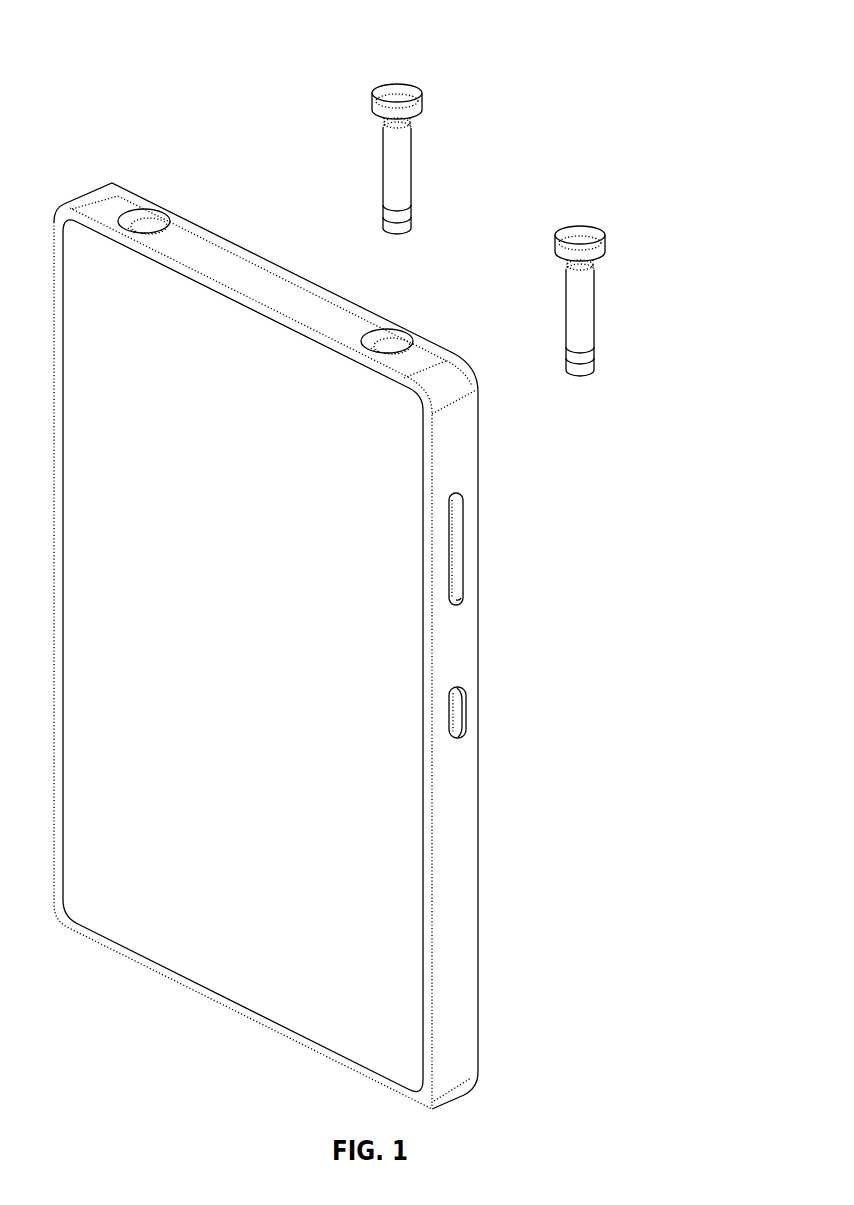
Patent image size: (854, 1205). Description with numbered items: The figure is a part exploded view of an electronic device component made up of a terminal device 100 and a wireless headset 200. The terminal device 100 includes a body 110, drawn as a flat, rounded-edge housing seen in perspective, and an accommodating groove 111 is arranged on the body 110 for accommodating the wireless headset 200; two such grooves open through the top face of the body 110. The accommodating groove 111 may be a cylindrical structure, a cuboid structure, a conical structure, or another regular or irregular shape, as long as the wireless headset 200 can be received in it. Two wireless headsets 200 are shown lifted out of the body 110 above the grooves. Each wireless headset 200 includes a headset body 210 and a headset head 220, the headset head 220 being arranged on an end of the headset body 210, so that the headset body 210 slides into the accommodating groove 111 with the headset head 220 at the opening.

The terminal device 100 is at (326, 618).
The body 110 is at (465, 803).
The accommodating groove 111 is at (147, 215).
The wireless headset 200 is at (608, 302).
The headset body 210 is at (414, 178).
The headset head 220 is at (423, 97).